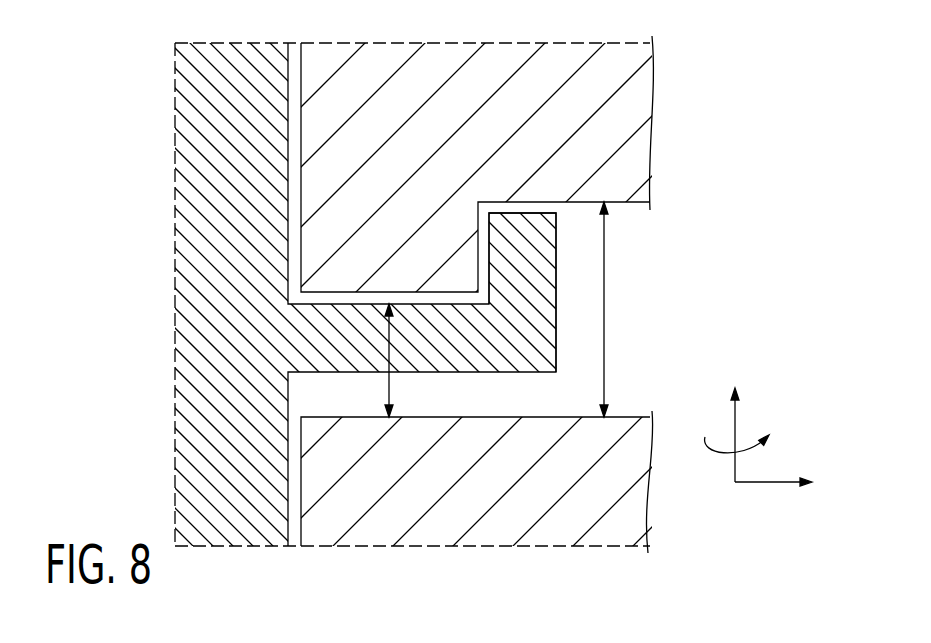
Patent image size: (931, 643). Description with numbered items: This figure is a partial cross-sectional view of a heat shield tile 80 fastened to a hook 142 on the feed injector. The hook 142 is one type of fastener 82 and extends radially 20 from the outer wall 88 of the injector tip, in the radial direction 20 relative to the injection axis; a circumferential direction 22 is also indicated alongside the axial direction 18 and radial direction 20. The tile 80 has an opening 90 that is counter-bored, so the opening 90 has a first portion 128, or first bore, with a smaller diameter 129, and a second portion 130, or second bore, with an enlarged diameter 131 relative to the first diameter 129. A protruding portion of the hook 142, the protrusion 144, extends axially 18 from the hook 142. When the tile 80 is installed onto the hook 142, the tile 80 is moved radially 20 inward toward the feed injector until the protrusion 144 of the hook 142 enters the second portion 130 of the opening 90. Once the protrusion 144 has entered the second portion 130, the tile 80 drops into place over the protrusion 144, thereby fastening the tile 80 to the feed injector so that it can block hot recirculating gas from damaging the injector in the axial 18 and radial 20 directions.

The axial direction 18 is at (735, 418).
The radial direction 20 is at (775, 482).
The circumferential direction 22 is at (718, 455).
The tile 80 is at (630, 173).
The fastener 82 is at (490, 372).
The outer wall 88 is at (288, 522).
The opening 90 is at (630, 367).
The first portion 128 is at (302, 400).
The smaller diameter 129 is at (389, 389).
The second portion 130 is at (640, 265).
The enlarged diameter 131 is at (604, 308).
The hook 142 is at (447, 372).
The protrusion 144 is at (556, 292).